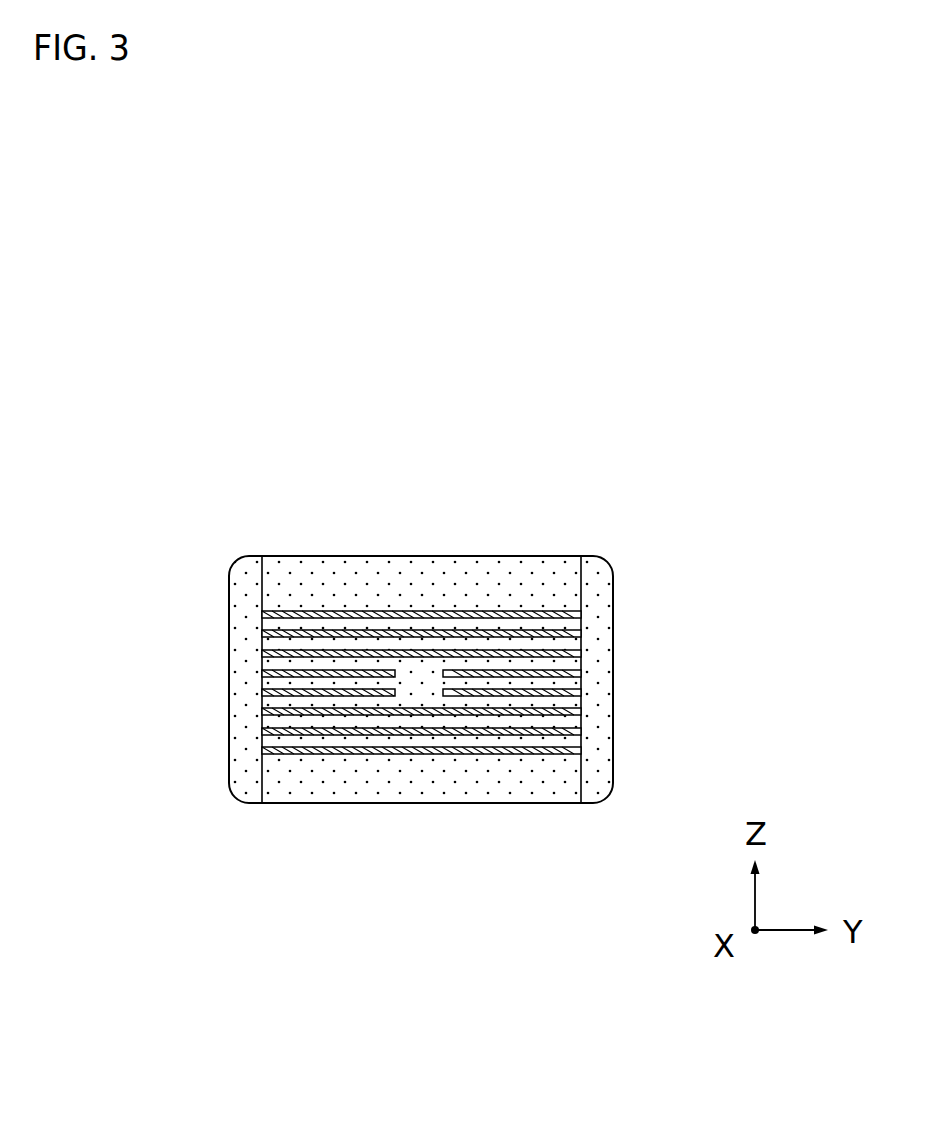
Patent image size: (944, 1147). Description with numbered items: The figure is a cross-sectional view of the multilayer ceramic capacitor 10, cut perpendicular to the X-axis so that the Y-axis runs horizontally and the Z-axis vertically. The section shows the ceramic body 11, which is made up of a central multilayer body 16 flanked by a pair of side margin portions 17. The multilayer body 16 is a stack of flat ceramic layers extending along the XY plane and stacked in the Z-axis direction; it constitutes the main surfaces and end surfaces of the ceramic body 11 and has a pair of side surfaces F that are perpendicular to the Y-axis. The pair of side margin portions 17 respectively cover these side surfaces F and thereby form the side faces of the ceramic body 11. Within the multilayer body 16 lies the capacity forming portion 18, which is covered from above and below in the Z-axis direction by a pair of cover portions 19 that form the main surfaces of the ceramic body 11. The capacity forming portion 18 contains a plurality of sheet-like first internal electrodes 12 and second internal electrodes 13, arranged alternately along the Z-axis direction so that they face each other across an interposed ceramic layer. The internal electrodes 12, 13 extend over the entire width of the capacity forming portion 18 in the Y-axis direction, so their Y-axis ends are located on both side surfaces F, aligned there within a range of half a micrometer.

The multilayer ceramic capacitor 10 is at (212, 470).
The ceramic body 11 is at (591, 502).
The first internal electrode 12 is at (370, 610).
The second internal electrode 13 is at (525, 629).
The multilayer body 16 is at (428, 533).
The side margin portion 17 is at (252, 680).
The capacity forming portion 18 is at (441, 695).
The cover portion 19 is at (441, 601).
The side surface F is at (260, 762).